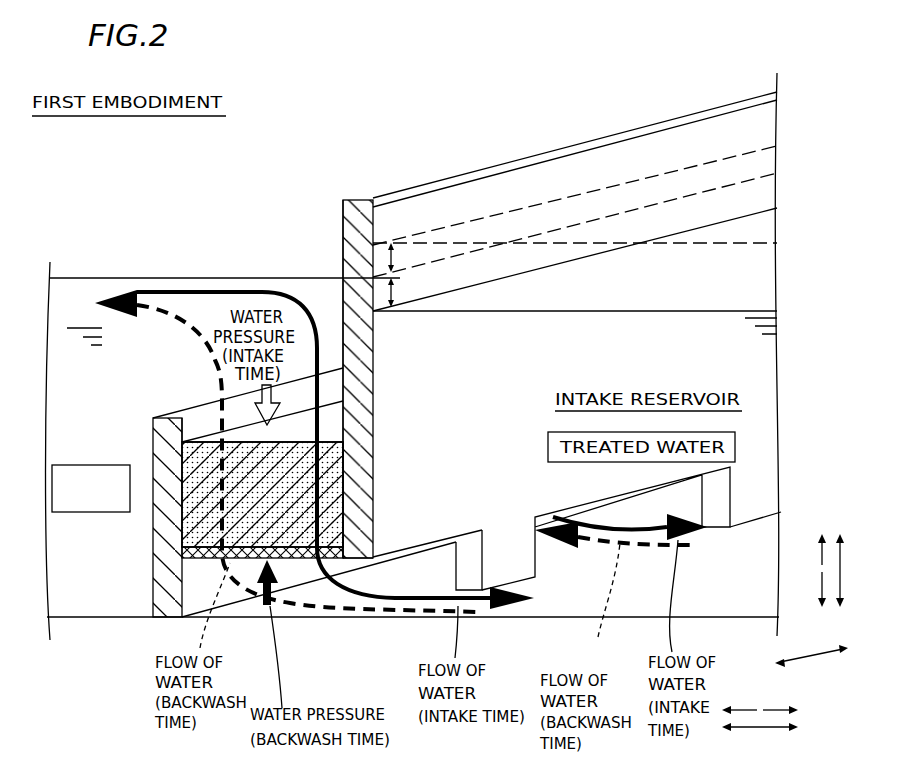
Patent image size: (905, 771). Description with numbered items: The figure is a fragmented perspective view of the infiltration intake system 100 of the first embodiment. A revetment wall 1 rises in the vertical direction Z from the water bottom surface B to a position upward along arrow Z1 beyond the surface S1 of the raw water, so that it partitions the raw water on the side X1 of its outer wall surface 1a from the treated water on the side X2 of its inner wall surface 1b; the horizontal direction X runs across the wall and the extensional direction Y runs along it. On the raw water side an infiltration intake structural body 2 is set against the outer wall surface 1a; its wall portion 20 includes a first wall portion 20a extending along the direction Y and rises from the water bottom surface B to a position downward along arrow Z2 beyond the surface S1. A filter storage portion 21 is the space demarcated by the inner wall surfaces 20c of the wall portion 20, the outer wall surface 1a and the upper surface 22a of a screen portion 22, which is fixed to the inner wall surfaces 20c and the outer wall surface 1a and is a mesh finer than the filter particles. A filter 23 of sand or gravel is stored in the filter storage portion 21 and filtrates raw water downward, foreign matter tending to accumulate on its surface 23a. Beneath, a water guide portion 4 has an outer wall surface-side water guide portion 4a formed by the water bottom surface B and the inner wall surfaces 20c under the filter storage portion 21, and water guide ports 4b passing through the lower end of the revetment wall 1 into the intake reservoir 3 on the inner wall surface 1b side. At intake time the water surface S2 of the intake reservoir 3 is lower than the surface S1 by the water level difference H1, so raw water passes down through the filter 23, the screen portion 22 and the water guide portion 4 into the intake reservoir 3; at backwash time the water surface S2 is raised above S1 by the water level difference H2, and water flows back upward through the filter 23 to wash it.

The infiltration intake system 100 is at (194, 200).
The revetment wall 1 is at (359, 199).
The outer wall surface 1a is at (342, 234).
The inner wall surface 1b is at (421, 198).
The surface of the raw water S1 is at (240, 276).
The water surface of the intake reservoir S2 is at (742, 241).
The water level difference H1 is at (395, 283).
The water level difference H2 is at (394, 262).
The infiltration intake structural body 2 is at (134, 456).
The wall portion 20 is at (126, 564).
The first wall portion 20a is at (162, 608).
The inner wall surfaces 20c is at (197, 432).
The filter storage portion 21 is at (340, 395).
The filter 23 is at (183, 520).
The surface of the filter 23a is at (325, 428).
The screen portion 22 is at (183, 552).
The upper surface of the screen portion 22a is at (352, 528).
The water bottom surface B is at (89, 616).
The water guide portion 4 is at (456, 584).
The outer wall surface-side water guide portion 4a is at (313, 574).
The water guide ports 4b is at (388, 578).
The intake reservoir 3 is at (745, 610).
The upward direction Z1 is at (809, 549).
The downward direction Z2 is at (809, 589).
The vertical direction Z is at (848, 570).
The extensional direction Y is at (811, 648).
The raw water side X1 is at (739, 700).
The treated water side X2 is at (780, 700).
The horizontal direction X is at (760, 737).